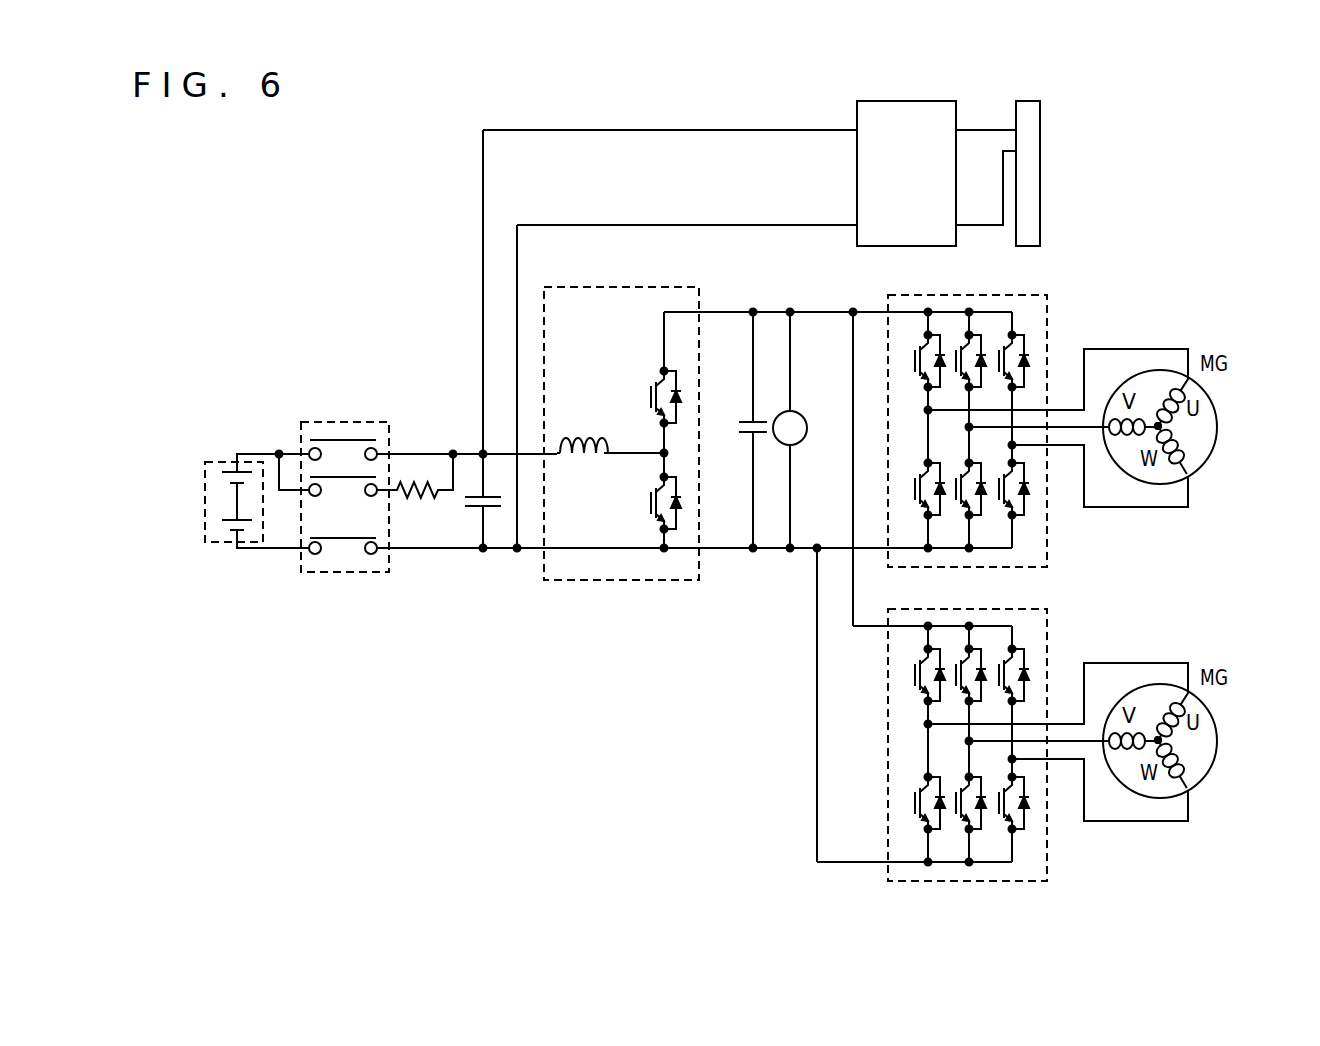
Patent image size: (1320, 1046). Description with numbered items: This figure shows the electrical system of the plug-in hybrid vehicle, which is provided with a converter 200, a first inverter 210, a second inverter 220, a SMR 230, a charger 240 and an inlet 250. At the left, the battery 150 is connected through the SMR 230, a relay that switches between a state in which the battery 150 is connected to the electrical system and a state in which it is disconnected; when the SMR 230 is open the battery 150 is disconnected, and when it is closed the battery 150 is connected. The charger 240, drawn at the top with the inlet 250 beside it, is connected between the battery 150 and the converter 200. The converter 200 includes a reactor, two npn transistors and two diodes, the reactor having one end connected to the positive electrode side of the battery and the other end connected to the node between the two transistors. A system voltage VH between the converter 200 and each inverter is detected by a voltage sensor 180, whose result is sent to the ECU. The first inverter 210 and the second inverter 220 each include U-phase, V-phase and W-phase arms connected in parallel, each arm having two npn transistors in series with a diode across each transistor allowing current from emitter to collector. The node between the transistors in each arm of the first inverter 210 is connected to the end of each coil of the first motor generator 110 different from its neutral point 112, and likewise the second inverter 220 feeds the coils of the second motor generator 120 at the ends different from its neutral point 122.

The first motor generator 110 is at (1203, 462).
The neutral point 112 is at (1158, 424).
The second motor generator 120 is at (1203, 776).
The neutral point 122 is at (1158, 738).
The battery 150 is at (220, 462).
The voltage sensor 180 is at (800, 443).
The converter 200 is at (680, 283).
The first inverter 210 is at (1050, 520).
The second inverter 220 is at (1050, 834).
The SMR (System Main Relay) 230 is at (345, 420).
The charger 240 is at (857, 167).
The inlet 250 is at (1040, 176).